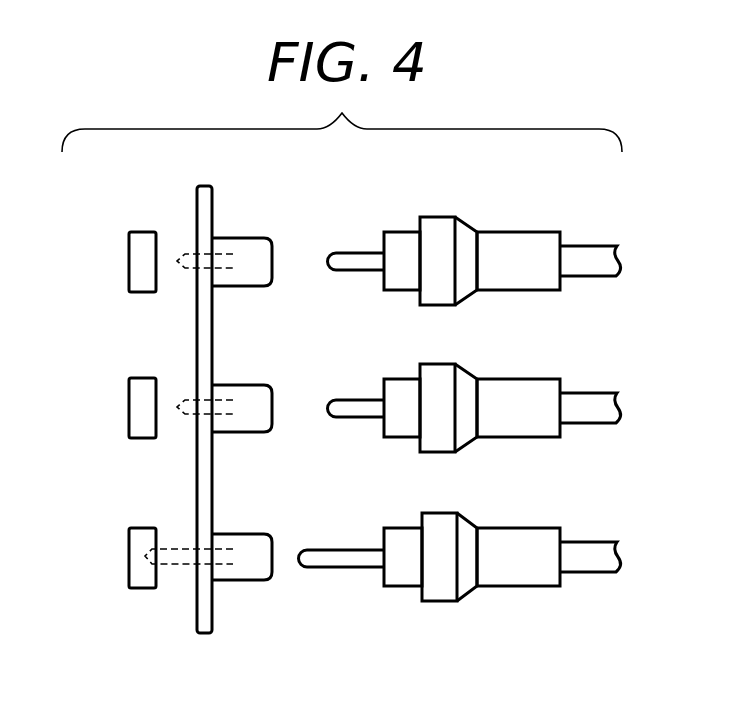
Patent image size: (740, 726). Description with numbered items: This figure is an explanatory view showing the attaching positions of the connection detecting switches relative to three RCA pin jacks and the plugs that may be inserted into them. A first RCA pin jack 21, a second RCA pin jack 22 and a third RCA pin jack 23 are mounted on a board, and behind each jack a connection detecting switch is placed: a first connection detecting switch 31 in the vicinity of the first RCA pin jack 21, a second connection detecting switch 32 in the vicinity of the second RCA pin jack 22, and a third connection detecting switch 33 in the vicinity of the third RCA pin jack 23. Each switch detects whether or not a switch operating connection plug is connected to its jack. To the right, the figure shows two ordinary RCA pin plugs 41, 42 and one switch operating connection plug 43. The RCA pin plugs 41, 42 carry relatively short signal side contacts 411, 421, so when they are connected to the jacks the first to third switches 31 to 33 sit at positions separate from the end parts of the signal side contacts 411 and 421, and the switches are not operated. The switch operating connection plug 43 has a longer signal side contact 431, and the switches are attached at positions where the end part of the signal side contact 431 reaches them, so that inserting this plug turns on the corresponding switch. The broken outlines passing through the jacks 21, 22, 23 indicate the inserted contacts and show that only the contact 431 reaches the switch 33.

The first RCA pin jack 21 is at (242, 245).
The second RCA pin jack 22 is at (242, 392).
The third RCA pin jack 23 is at (242, 574).
The first connection detecting switch 31 is at (135, 263).
The second connection detecting switch 32 is at (135, 410).
The third connection detecting switch 33 is at (135, 558).
The RCA pin plug 41 is at (440, 225).
The RCA pin plug 42 is at (502, 387).
The switch operating connection plug 43 is at (442, 595).
The signal side contact 411 is at (353, 257).
The signal side contact 421 is at (353, 405).
The signal side contact 431 is at (353, 561).